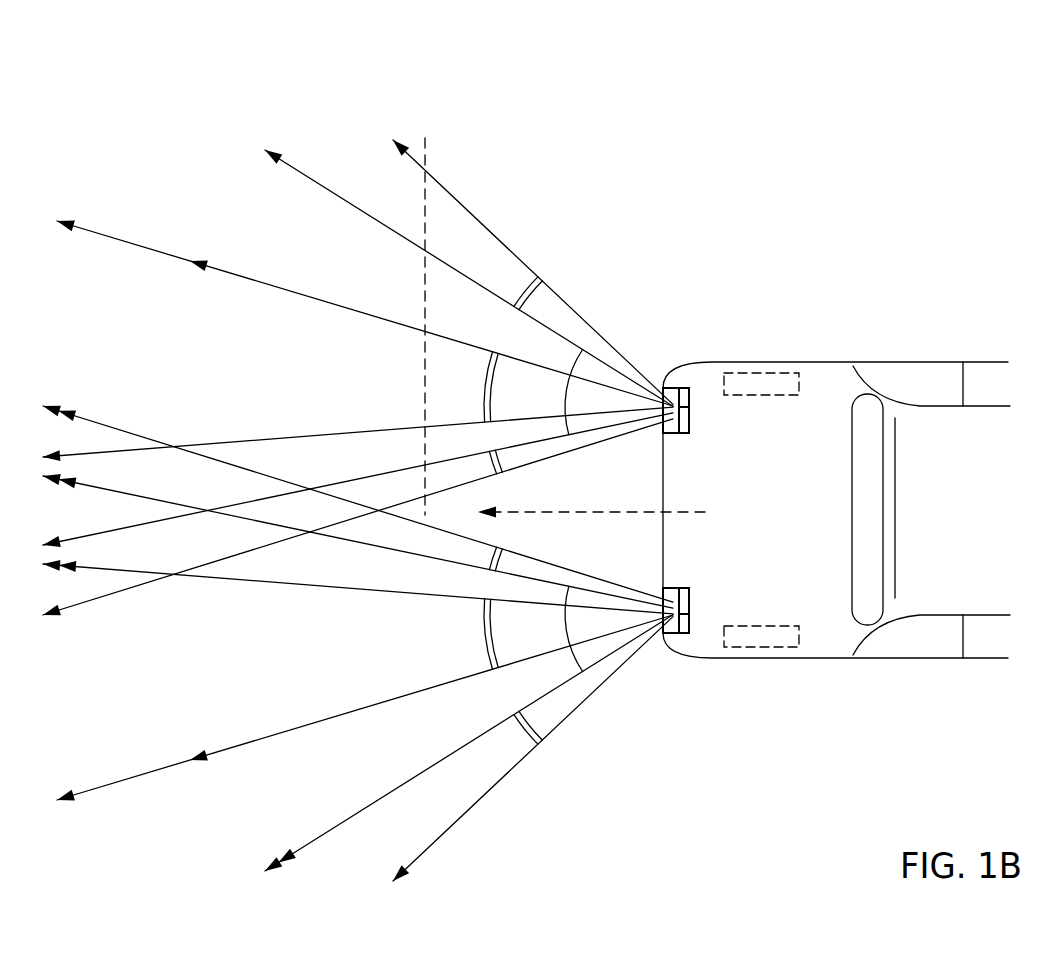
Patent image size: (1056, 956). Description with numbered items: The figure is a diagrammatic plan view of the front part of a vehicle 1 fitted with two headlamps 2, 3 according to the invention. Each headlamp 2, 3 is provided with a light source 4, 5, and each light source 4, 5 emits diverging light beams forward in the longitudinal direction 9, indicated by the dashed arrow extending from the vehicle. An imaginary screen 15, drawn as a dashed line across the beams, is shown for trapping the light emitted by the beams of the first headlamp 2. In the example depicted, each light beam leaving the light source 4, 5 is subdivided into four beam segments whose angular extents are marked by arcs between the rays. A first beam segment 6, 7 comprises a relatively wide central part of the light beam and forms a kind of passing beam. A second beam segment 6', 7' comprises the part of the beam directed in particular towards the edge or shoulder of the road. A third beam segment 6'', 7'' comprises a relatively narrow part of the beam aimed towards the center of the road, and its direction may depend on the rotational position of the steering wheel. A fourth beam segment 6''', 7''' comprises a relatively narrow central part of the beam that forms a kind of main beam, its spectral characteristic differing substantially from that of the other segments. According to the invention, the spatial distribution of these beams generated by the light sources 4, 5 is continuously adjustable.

The vehicle 1 is at (893, 349).
The headlamp 2 is at (690, 418).
The headlamp 3 is at (690, 603).
The light source 4 is at (689, 403).
The light source 5 is at (689, 618).
The first beam segment 6 is at (358, 377).
The second beam segment 6' is at (527, 293).
The third beam segment 6'' is at (481, 387).
The fourth beam segment 6''' is at (482, 466).
The first beam segment 7 is at (358, 643).
The second beam segment 7' is at (526, 734).
The third beam segment 7'' is at (480, 634).
The fourth beam segment 7''' is at (482, 557).
The longitudinal direction 9 is at (627, 505).
The imaginary screen 15 is at (428, 143).